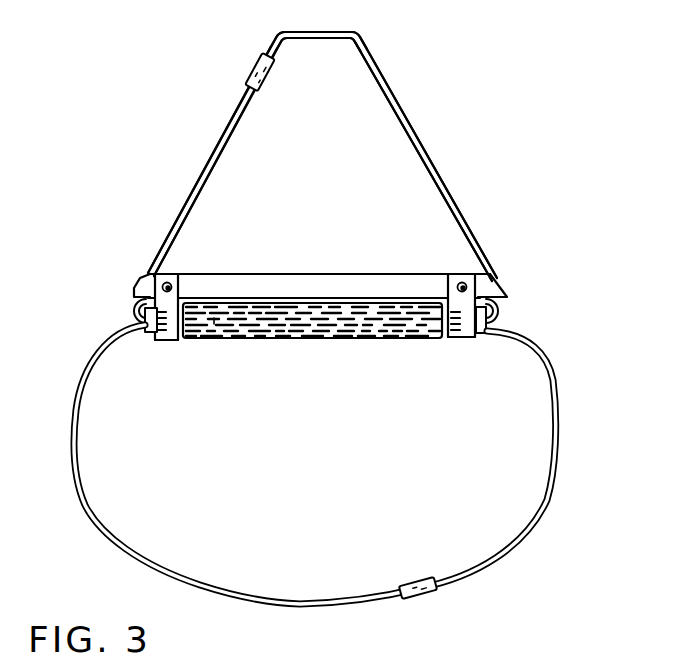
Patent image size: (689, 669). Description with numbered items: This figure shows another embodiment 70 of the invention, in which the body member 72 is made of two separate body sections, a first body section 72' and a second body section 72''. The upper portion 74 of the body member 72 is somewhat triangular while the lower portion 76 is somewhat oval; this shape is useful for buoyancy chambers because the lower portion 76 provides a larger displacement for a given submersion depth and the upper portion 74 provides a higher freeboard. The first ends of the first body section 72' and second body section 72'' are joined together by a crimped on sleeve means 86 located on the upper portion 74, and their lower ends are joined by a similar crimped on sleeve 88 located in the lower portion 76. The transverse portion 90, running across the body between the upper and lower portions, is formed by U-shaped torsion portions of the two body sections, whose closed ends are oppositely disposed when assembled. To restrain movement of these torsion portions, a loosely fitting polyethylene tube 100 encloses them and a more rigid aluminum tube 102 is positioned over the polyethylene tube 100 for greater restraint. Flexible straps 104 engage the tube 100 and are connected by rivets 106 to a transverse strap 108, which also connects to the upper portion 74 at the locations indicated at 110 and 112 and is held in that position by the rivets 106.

The embodiment 70 is at (548, 163).
The body member 72 is at (350, 156).
The upper portion 74 is at (385, 75).
The first body section 72' is at (463, 159).
The second body section 72'' is at (193, 162).
The lower portion 76 is at (557, 440).
The crimped on sleeve means 86 is at (252, 68).
The crimped on sleeve 88 is at (418, 580).
The transverse portion 90 is at (218, 325).
The polyethylene tube 100 is at (478, 340).
The aluminum tube 102 is at (388, 340).
The flexible straps 104 is at (163, 338).
The rivets 106 is at (180, 272).
The transverse strap 108 is at (295, 277).
The connection of transverse strap to upper portion 110 is at (500, 282).
The connection of transverse strap to upper portion 112 is at (140, 280).